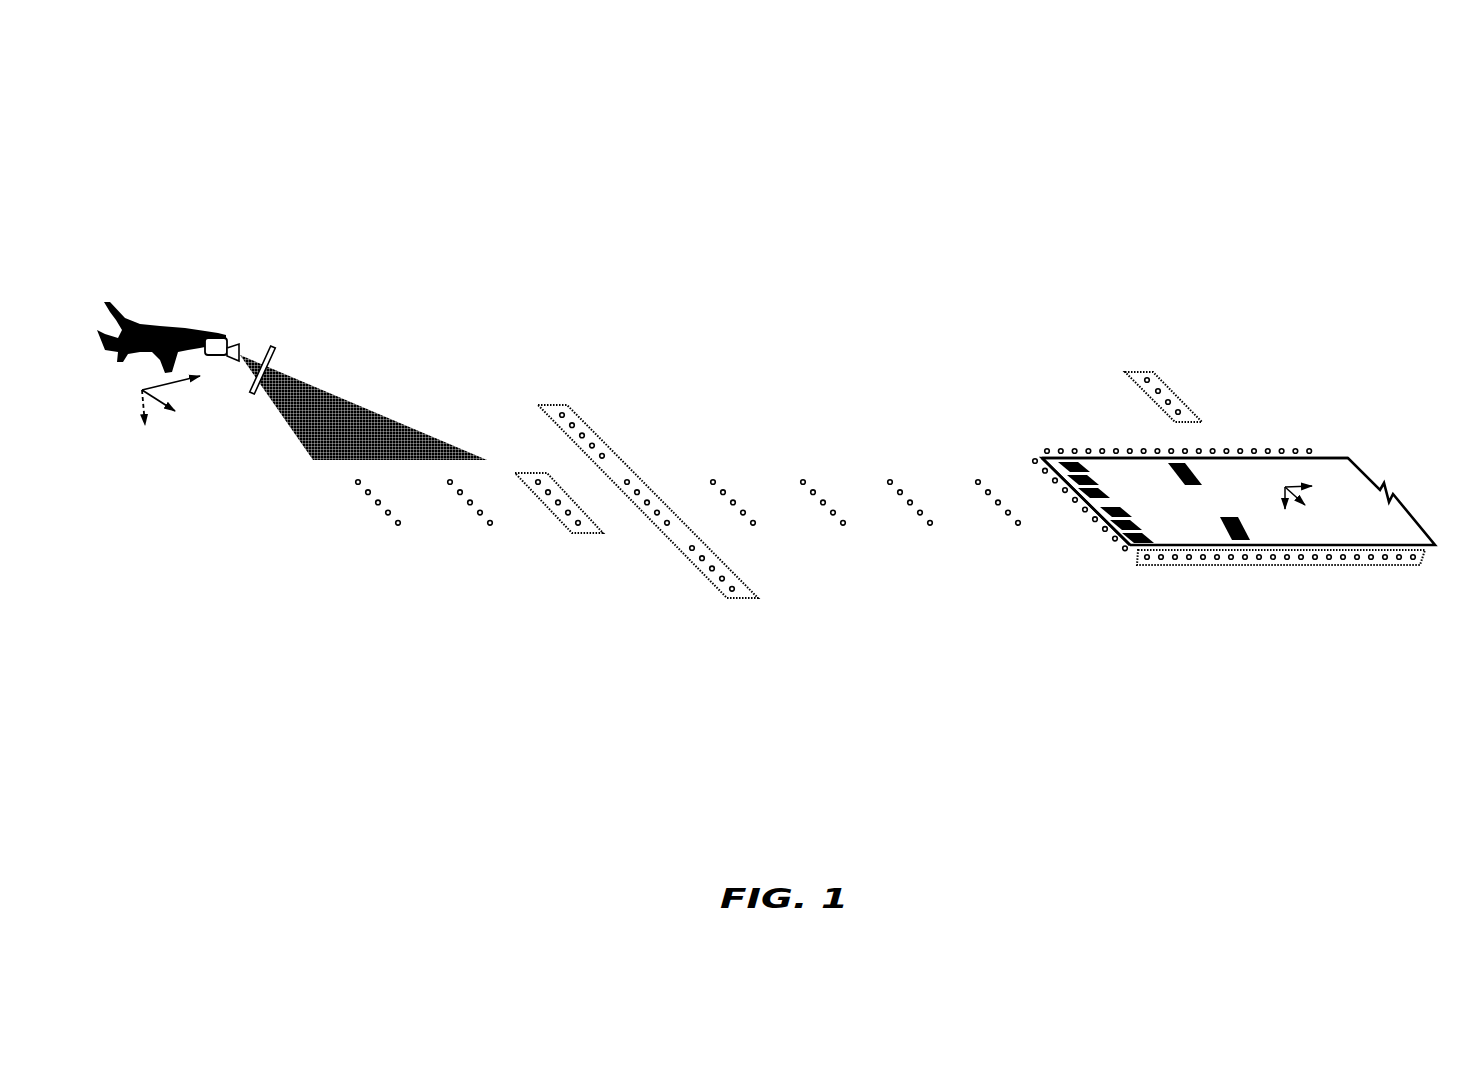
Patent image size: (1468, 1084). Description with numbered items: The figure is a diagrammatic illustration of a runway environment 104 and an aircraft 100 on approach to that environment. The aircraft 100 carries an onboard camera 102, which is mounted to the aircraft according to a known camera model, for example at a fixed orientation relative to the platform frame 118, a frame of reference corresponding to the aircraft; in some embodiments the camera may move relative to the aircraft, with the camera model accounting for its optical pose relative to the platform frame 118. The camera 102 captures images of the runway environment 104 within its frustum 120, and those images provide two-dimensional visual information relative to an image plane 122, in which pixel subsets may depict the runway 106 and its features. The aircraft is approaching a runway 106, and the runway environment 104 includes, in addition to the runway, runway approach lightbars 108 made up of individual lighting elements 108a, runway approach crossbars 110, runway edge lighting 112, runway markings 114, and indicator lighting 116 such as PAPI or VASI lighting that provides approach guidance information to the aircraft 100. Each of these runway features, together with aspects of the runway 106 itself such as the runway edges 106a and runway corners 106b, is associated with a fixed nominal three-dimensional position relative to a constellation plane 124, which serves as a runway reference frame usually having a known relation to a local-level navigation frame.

The aircraft 100 is at (192, 330).
The onboard camera 102 is at (220, 340).
The runway environment 104 is at (156, 158).
The runway 106 is at (1342, 493).
The runway edges 106a is at (1328, 451).
The runway corners 106b is at (1129, 554).
The runway approach lightbars 108 is at (588, 533).
The individual lighting elements 108a is at (1016, 525).
The runway approach crossbars 110 is at (715, 583).
The runway edge lighting 112 is at (1278, 567).
The runway markings 114 is at (1172, 468).
The indicator lighting 116 is at (1175, 395).
The platform frame 118 is at (166, 429).
The frustum 120 is at (370, 427).
The image plane 122 is at (252, 393).
The constellation plane 124 is at (1319, 509).